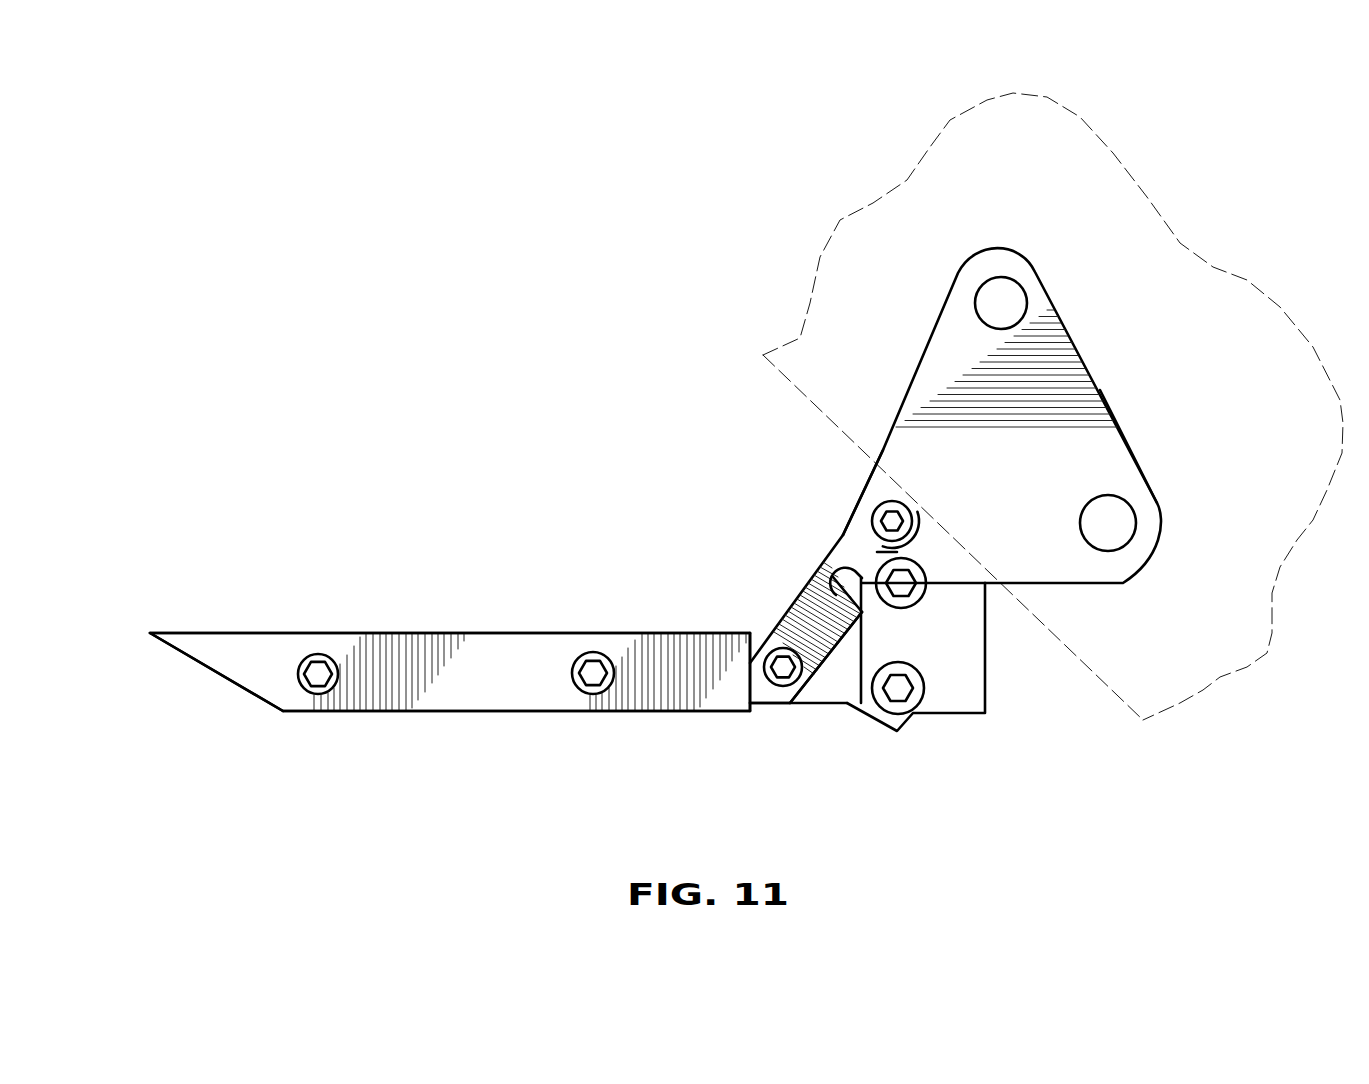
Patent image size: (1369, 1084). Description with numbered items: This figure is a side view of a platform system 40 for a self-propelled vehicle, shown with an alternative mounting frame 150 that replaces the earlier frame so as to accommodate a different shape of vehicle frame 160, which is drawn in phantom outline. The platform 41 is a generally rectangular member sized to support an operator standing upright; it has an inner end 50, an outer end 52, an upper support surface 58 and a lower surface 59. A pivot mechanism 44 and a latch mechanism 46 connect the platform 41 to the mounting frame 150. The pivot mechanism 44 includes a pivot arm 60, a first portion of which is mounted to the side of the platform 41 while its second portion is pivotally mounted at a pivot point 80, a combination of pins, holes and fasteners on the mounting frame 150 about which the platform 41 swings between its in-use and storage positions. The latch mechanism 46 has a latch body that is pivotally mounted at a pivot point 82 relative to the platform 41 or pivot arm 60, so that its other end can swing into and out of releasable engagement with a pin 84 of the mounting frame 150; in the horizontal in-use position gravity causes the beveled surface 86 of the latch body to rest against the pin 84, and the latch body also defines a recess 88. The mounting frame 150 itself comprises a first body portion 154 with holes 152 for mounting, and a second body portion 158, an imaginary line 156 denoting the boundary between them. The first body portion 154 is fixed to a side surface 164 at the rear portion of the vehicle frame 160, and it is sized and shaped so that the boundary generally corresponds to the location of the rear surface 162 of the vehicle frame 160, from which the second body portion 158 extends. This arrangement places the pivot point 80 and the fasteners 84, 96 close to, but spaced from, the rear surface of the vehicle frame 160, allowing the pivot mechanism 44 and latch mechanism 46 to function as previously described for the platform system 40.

The platform system 40 is at (247, 697).
The platform 41 is at (322, 633).
The pivot mechanism 44 is at (840, 683).
The latch mechanism 46 is at (795, 610).
The inner end 50 is at (750, 633).
The outer end 52 is at (150, 633).
The upper support surface 58 is at (495, 633).
The lower surface 59 is at (571, 711).
The pivot arm 60 is at (825, 693).
The pivot point 80 is at (902, 583).
The pivot point 82 is at (783, 670).
The pin 84 is at (890, 520).
The beveled surface 86 is at (900, 553).
The recess 88 is at (832, 568).
The fastener 96 is at (898, 688).
The mounting frame 150 is at (1088, 357).
The holes 152 is at (995, 292).
The first body portion 154 is at (1080, 457).
The imaginary line 156 is at (890, 473).
The second body portion 158 is at (957, 658).
The vehicle frame 160 is at (880, 225).
The rear surface 162 is at (783, 373).
The side surface 164 is at (1195, 644).